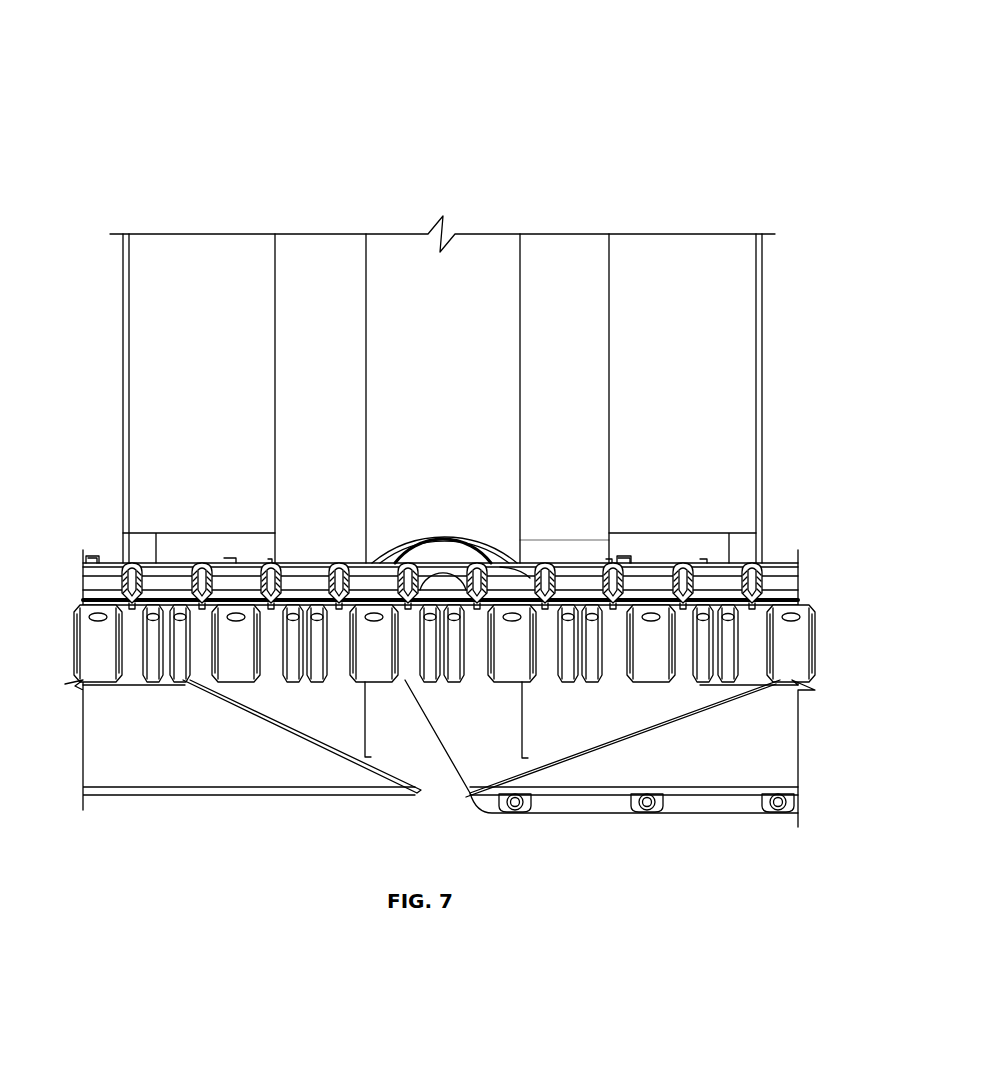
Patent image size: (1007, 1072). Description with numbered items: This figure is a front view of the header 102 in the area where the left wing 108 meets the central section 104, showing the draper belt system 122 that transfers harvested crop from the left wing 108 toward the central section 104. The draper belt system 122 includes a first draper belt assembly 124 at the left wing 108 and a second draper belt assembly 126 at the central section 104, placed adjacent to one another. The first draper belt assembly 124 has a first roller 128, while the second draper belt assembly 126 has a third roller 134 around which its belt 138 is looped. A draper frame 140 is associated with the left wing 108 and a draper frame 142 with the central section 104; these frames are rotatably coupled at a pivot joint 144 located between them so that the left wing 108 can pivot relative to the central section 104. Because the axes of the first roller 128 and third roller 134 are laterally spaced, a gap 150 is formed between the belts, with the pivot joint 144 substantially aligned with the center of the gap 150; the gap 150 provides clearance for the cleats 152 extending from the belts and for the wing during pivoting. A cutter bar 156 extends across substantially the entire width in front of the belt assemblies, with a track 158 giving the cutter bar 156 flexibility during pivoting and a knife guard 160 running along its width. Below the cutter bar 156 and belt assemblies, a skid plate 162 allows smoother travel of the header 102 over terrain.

The header 102 is at (650, 47).
The central section 104 is at (205, 216).
The left wing 108 is at (702, 194).
The draper belt system 122 is at (561, 492).
The first draper belt assembly 124 is at (677, 533).
The second draper belt assembly 126 is at (184, 548).
The first roller 128 is at (520, 578).
The third roller 134 is at (360, 570).
The belt 138 is at (113, 560).
The draper frame 140 is at (765, 283).
The draper frame 142 is at (120, 303).
The pivot joint 144 is at (443, 562).
The gap 150 is at (422, 566).
The cleats 152 is at (90, 554).
The cutter bar 156 is at (785, 570).
The track 158 is at (405, 610).
The knife guard 160 is at (785, 594).
The skid plate 162 is at (785, 644).